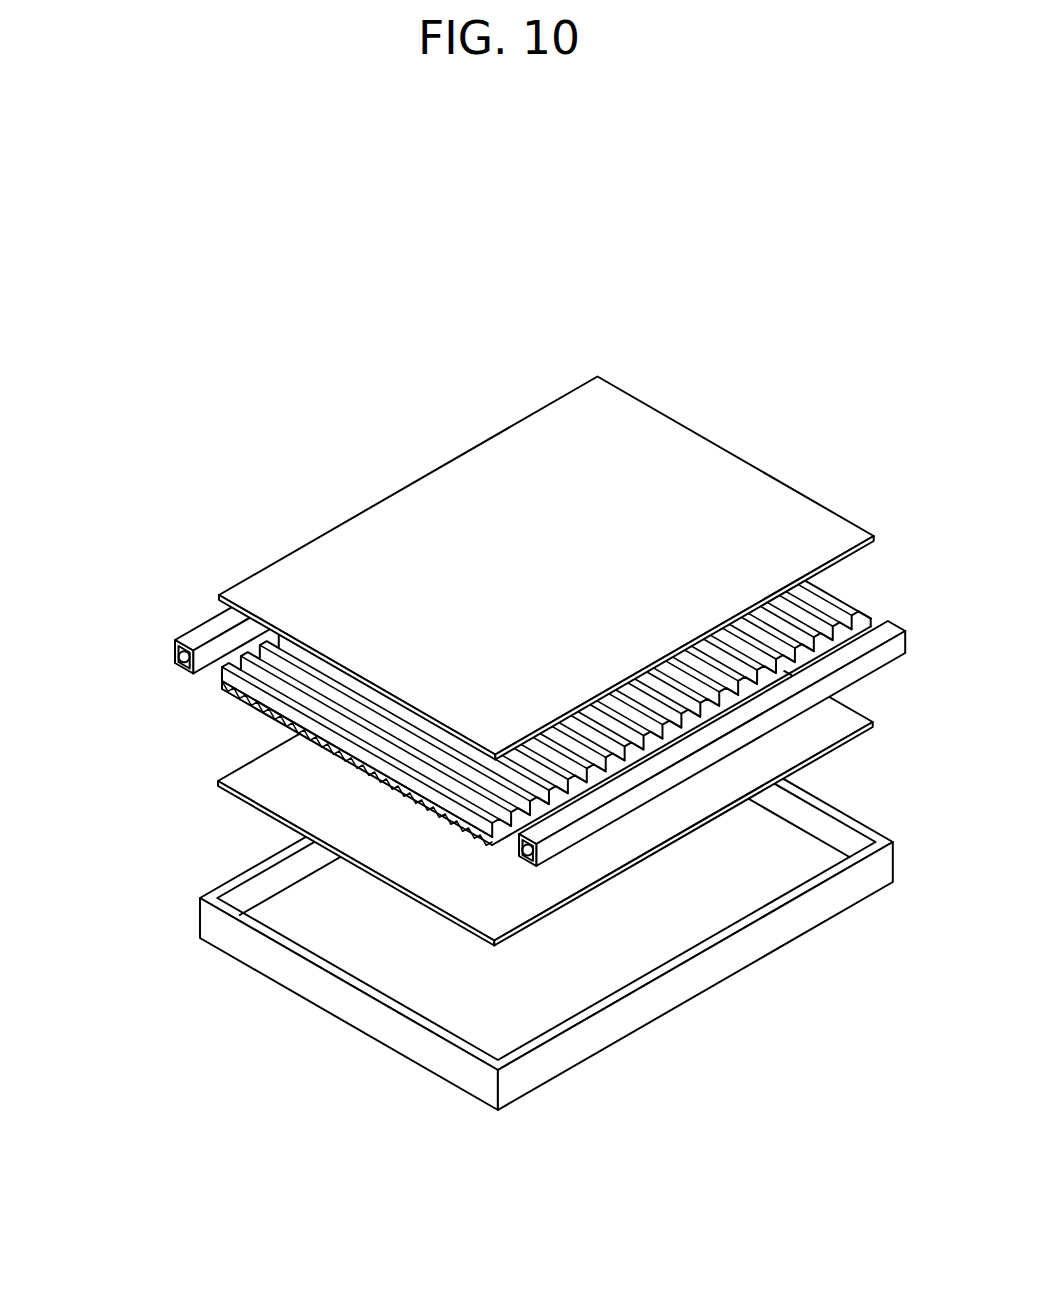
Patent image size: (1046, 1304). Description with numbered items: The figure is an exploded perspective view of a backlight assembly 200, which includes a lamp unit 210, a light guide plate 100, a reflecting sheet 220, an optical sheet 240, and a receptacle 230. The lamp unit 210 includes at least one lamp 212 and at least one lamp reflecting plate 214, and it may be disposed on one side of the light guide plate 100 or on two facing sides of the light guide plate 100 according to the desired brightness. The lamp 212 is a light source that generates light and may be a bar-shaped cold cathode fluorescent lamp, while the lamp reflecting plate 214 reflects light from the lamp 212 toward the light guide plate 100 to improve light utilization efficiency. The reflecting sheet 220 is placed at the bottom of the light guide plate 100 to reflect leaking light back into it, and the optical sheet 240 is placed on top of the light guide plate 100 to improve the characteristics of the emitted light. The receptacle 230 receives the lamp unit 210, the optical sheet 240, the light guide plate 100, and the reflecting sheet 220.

The backlight assembly 200 is at (811, 359).
The optical sheet 240 is at (218, 596).
The lamp unit 210 is at (467, 720).
The lamp reflecting plate 214 is at (178, 651).
The lamp 212 is at (178, 667).
The light guide plate 100 is at (226, 700).
The reflecting sheet 220 is at (245, 789).
The receptacle 230 is at (200, 916).